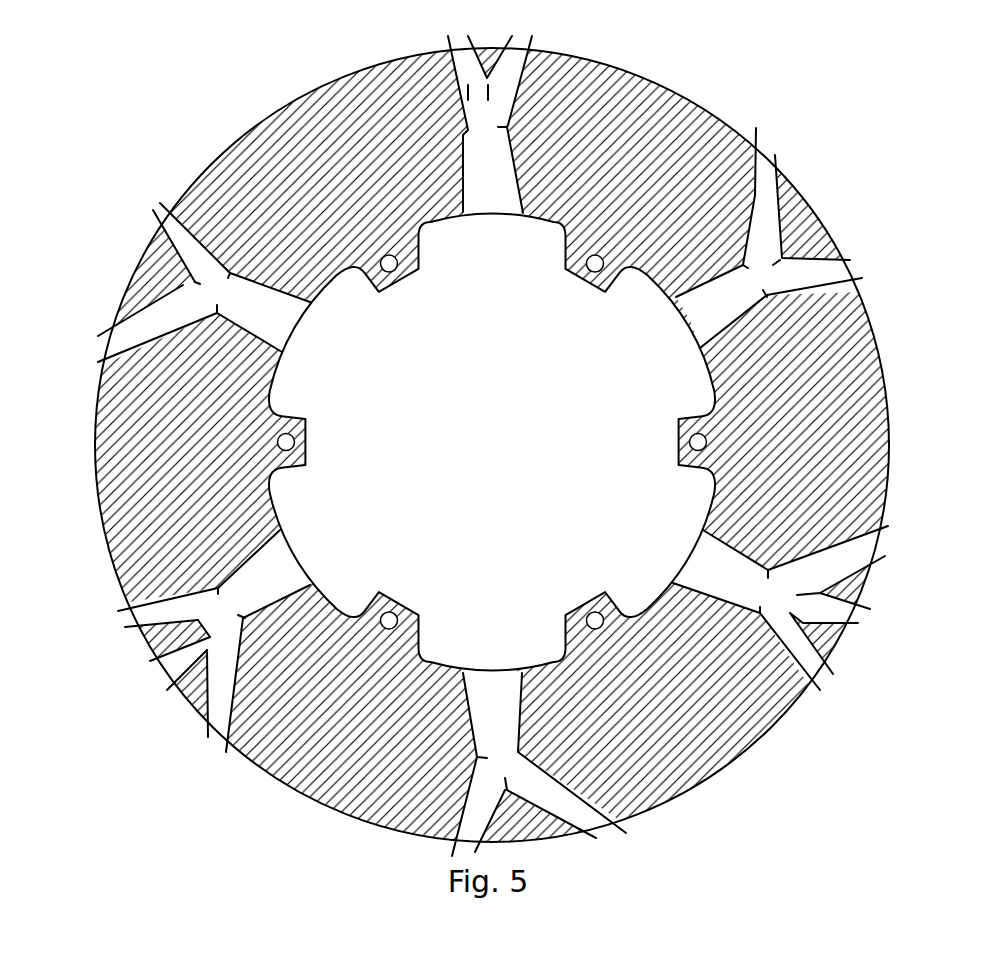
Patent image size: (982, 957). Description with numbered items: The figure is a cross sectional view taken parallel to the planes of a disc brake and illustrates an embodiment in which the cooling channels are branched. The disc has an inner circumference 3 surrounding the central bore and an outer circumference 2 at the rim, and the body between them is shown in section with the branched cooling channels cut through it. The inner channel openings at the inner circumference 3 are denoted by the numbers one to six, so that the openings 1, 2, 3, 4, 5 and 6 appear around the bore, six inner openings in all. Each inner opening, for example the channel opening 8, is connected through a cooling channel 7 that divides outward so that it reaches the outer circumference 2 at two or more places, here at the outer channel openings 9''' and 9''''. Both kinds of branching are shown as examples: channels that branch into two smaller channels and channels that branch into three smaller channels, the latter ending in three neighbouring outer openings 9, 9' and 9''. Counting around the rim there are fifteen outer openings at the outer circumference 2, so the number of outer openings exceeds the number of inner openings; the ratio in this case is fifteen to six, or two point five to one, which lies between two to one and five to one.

The inner opening 1 is at (701, 107).
The outer circumference 2 is at (887, 405).
The inner circumference 3 is at (653, 300).
The inner opening 4 is at (539, 746).
The inner opening 5 is at (260, 583).
The inner opening 6 is at (256, 317).
The radial cooling channel 7 is at (769, 238).
The channel opening 8 is at (302, 320).
The cooling channel branch 9 is at (201, 711).
The cooling channel branch 9' is at (142, 686).
The cooling channel branch 9'' is at (127, 613).
The channel opening 9''' is at (125, 335).
The channel opening 9'''' is at (172, 230).